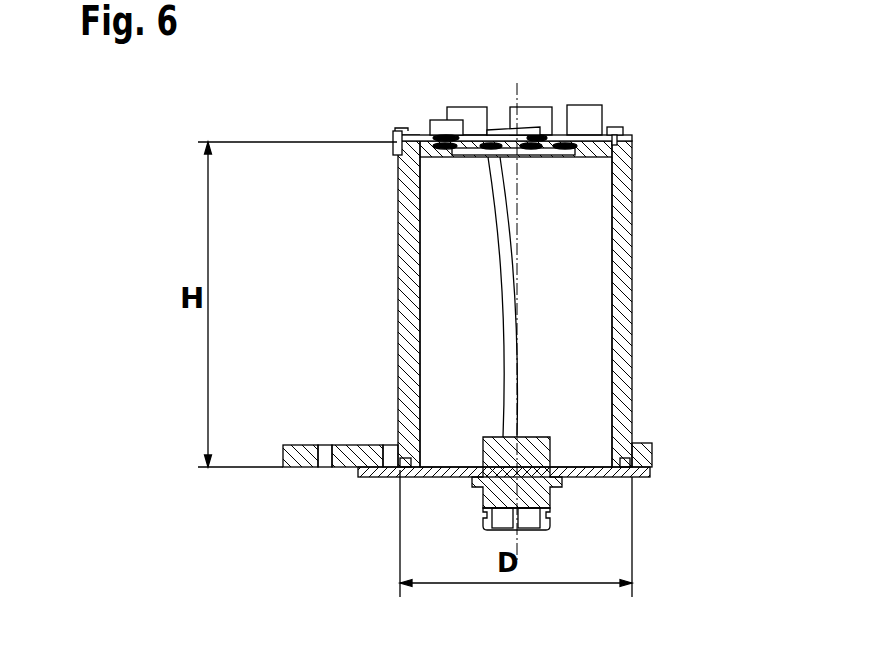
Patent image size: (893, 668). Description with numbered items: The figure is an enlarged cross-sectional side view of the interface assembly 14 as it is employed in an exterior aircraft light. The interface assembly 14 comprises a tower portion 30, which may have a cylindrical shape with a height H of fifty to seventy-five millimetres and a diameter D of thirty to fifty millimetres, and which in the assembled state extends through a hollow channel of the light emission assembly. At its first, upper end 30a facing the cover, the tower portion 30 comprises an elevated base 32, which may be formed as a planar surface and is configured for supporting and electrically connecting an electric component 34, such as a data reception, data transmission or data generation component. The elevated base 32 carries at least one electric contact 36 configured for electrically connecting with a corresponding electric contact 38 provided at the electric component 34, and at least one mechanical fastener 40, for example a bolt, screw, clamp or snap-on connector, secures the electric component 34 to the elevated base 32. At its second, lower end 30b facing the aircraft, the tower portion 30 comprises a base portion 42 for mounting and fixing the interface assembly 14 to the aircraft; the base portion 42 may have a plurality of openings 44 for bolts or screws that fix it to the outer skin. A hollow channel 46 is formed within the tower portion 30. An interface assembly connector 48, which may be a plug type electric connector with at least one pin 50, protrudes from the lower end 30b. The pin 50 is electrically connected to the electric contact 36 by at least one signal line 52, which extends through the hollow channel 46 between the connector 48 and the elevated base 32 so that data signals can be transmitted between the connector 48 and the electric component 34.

The interface assembly 14 is at (348, 272).
The tower portion 30 is at (623, 290).
The first end 30a is at (380, 158).
The second end 30b is at (657, 467).
The elevated base 32 is at (587, 152).
The electric component 34 is at (662, 82).
The electric contact 36 is at (493, 132).
The electric contact 38 is at (435, 123).
The mechanical fastener 40 is at (397, 131).
The base portion 42 is at (341, 438).
The opening 44 is at (327, 462).
The hollow channel 46 is at (580, 405).
The interface assembly connector 48 is at (468, 517).
The pin 50 is at (535, 537).
The signal line 52 is at (512, 333).